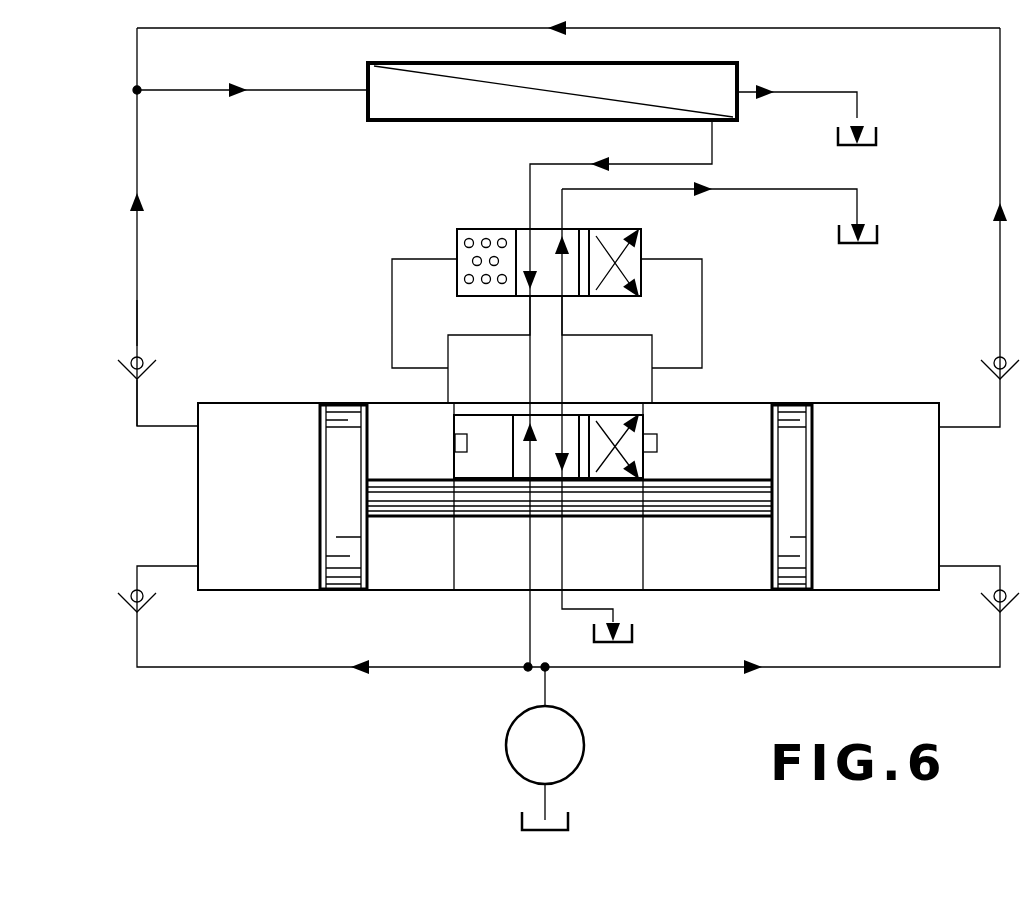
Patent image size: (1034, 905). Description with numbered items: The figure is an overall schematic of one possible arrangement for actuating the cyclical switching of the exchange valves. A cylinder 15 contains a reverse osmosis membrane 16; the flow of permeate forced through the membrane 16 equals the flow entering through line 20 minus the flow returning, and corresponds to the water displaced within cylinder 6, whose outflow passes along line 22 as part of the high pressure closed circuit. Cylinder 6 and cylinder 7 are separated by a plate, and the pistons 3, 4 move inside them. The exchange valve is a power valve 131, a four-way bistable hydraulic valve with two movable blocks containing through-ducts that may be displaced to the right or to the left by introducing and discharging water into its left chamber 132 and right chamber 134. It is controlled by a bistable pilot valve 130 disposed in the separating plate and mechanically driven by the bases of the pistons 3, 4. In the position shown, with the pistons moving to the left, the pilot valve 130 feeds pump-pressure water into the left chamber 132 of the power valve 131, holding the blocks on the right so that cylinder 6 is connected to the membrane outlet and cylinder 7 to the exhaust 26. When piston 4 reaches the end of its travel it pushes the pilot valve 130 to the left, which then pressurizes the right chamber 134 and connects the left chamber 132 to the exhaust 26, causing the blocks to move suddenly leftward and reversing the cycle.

The piston 3 is at (343, 500).
The piston 4 is at (793, 507).
The cylinder 6 is at (232, 403).
The cylinder 7 is at (876, 403).
The cylinder 15 is at (372, 123).
The reverse osmosis membrane 16 is at (470, 78).
The line 20 is at (190, 95).
The line 22 is at (137, 288).
The exhaust 26 is at (876, 236).
The pilot valve 130 is at (636, 461).
The power valve 131 is at (515, 212).
The left chamber 132 is at (467, 277).
The right chamber 134 is at (630, 255).